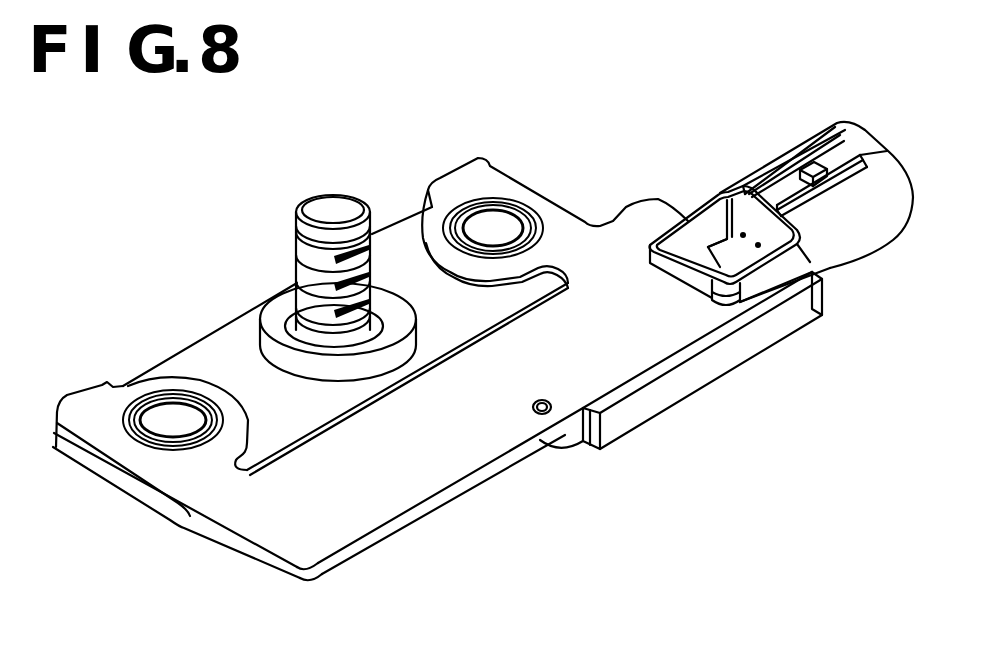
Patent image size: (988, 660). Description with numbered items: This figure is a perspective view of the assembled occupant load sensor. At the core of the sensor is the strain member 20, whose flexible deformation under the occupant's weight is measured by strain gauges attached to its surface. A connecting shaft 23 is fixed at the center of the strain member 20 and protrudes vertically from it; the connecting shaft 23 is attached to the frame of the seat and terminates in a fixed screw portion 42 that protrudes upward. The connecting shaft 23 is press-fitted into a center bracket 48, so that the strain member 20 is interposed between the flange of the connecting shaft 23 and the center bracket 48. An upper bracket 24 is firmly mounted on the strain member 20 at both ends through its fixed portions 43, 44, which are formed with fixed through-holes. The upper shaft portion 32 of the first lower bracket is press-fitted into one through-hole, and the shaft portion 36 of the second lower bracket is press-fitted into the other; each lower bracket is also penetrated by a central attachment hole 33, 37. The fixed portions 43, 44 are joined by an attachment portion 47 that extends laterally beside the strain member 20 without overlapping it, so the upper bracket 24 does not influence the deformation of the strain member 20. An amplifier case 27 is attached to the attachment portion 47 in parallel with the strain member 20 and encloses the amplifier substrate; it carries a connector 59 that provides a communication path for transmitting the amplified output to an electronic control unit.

The strain member 20 is at (397, 223).
The connecting shaft 23 is at (331, 208).
The upper bracket 24 is at (494, 424).
The amplifier case 27 is at (654, 402).
The upper shaft portion 32 is at (143, 437).
The attachment hole 33 is at (175, 417).
The shaft portion 36 is at (522, 212).
The attachment hole 37 is at (496, 228).
The fixed screw portion 42 is at (300, 252).
The fixed portion 43 is at (88, 407).
The fixed portion 44 is at (468, 178).
The attachment portion 47 is at (307, 547).
The center bracket 48 is at (270, 320).
The connector 59 is at (860, 230).